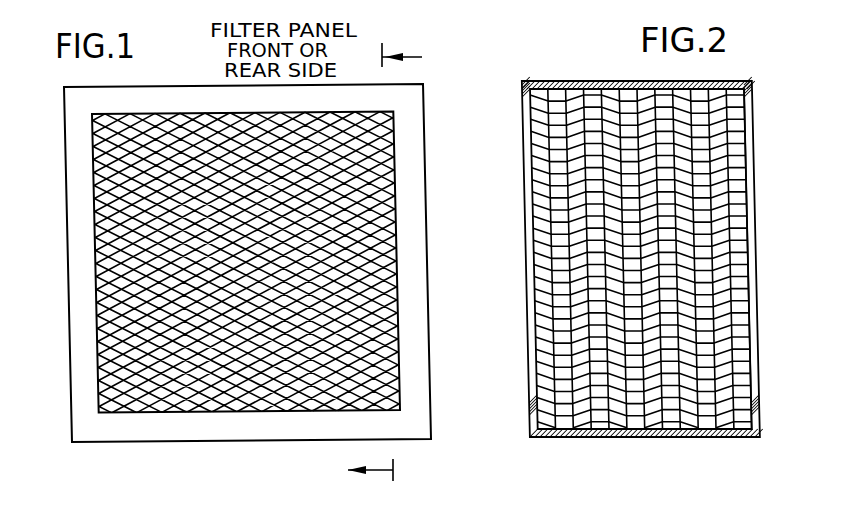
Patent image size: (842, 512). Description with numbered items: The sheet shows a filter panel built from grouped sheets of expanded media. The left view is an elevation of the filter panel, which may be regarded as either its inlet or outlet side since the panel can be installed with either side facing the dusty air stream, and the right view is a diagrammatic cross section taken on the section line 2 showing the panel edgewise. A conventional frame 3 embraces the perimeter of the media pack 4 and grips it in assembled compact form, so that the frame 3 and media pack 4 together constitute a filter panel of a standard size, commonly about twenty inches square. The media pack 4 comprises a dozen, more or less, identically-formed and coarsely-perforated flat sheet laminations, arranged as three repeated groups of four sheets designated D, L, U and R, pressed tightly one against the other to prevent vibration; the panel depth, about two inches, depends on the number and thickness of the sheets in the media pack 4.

In FIG. 1, the section line 2 is at (386, 262).
In FIG. 1, the frame 3 is at (410, 142).
In FIG. 2, the frame 3 is at (552, 82).
In FIG. 1, the media pack 4 is at (345, 230).
In FIG. 2, the media pack 4 is at (580, 231).